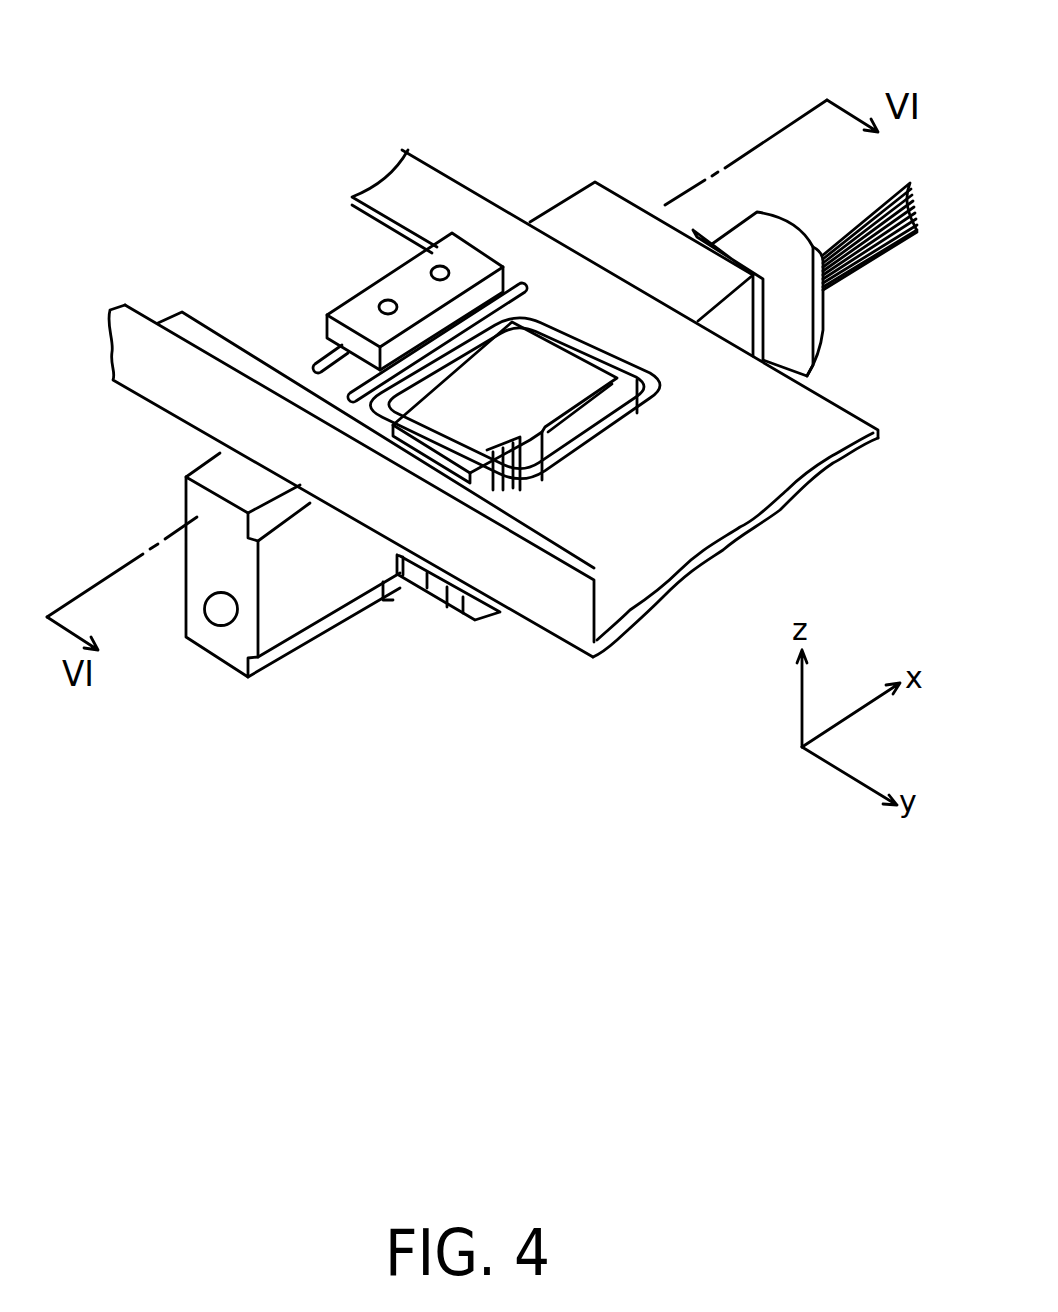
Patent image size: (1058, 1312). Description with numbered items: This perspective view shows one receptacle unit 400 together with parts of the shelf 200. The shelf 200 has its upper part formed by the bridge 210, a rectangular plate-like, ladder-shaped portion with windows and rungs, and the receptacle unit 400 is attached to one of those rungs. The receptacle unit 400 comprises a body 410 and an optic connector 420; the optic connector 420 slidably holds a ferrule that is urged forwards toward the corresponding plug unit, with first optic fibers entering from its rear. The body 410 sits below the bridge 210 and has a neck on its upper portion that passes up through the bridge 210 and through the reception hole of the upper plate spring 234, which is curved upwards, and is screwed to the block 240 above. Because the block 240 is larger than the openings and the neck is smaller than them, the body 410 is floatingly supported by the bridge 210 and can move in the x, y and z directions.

The shelf 200 is at (493, 377).
The bridge 210 is at (476, 134).
The upper plate spring 234 is at (316, 363).
The block 240 is at (367, 305).
The receptacle unit 400 is at (499, 338).
The body 410 is at (203, 513).
The optic connector 420 is at (580, 440).